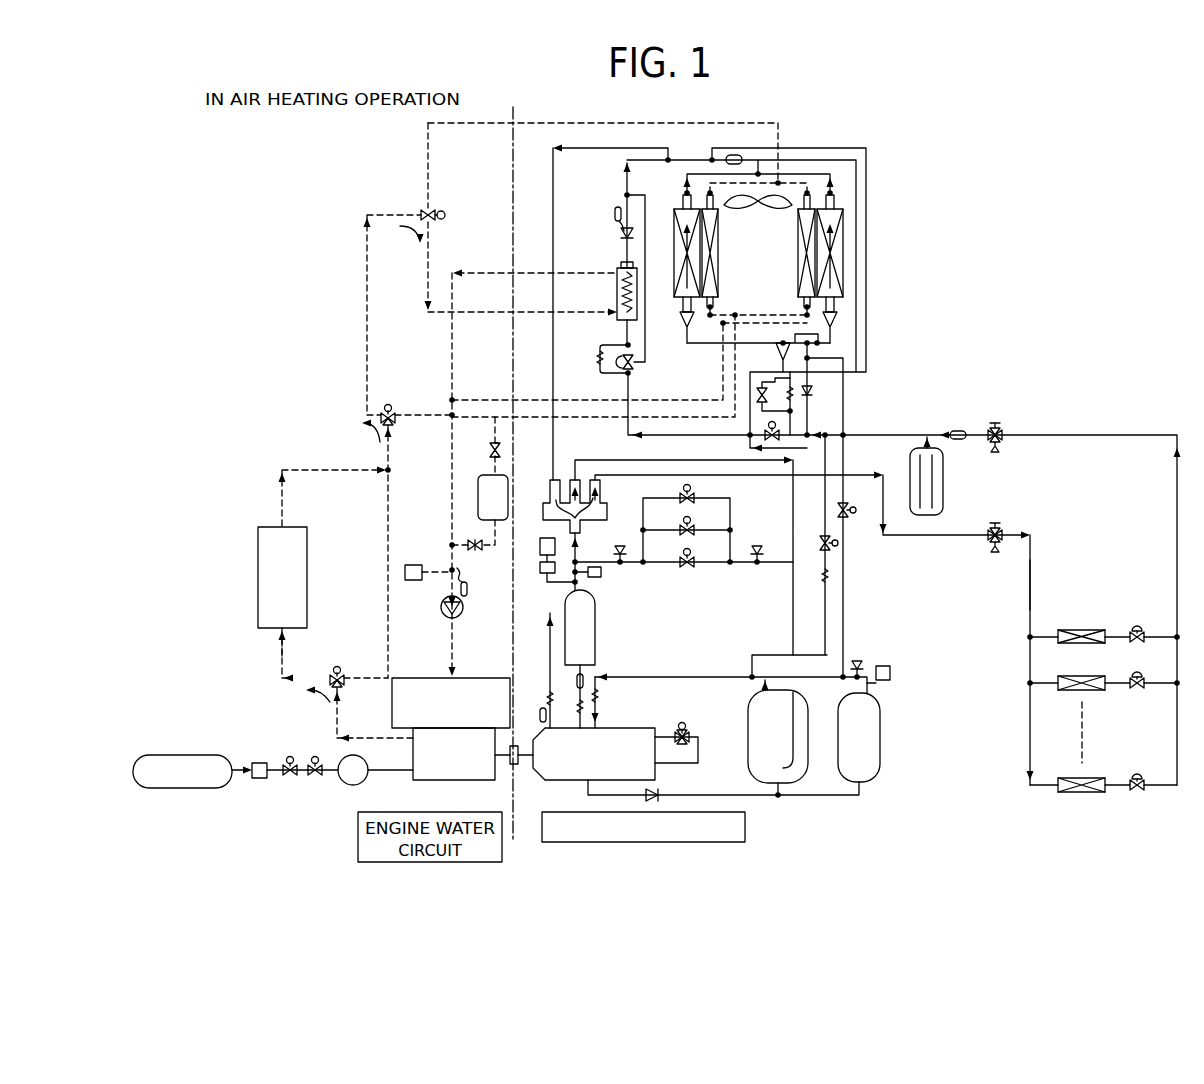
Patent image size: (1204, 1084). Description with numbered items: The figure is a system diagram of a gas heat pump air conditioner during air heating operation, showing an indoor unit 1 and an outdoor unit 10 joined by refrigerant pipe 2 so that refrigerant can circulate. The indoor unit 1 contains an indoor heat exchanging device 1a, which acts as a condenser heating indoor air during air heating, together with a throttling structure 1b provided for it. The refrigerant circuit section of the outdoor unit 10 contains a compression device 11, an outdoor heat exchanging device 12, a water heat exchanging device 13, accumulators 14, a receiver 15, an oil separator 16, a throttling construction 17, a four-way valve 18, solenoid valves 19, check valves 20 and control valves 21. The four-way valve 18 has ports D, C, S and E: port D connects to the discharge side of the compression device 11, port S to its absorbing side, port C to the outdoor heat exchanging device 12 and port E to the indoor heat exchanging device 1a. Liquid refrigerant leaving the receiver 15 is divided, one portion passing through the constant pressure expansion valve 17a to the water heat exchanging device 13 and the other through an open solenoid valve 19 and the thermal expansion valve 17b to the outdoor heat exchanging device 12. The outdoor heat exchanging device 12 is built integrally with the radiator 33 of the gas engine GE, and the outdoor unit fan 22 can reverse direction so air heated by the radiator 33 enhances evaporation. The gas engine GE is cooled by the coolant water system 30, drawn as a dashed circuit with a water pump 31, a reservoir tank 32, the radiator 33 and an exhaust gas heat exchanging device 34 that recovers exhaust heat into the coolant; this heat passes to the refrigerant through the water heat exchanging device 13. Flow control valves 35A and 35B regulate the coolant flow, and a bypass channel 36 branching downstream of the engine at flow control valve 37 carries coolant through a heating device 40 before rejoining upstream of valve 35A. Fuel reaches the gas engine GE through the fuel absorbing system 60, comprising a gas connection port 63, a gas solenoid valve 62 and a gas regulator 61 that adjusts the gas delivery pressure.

The indoor unit 1 is at (1119, 616).
The indoor heat exchanging device 1a is at (1080, 630).
The throttling structure 1b is at (1132, 645).
The refrigerant pipe 2 is at (1031, 583).
The outdoor unit 10 is at (905, 145).
The compression device 11 is at (680, 728).
The outdoor heat exchanging device 12 is at (674, 272).
The water heat exchanging device 13 is at (617, 268).
The accumulator 14 is at (748, 738).
The receiver 15 is at (945, 480).
The oil separator 16 is at (597, 625).
The throttling construction 17 is at (600, 358).
The throttling construction of the constant pressure expansion valve 17a is at (634, 364).
The throttling construction of the thermal expansion valve 17b is at (750, 390).
The 4-way valve 18 is at (604, 508).
The solenoid valve 19 is at (762, 437).
The check valve 20 is at (815, 392).
The control valve 21 is at (620, 232).
The outdoor unit fan 22 is at (775, 206).
The coolant water system 30 is at (372, 177).
The water pump 31 is at (464, 607).
The reservoir tank 32 is at (492, 478).
The radiator 33 is at (718, 255).
The exhaust gas heat exchanging device 34 is at (468, 678).
The flow control valve 35A is at (395, 414).
The flow control valve 35B is at (432, 207).
The bypass channel 36 is at (282, 656).
The flow control valve 37 is at (346, 668).
The heating device 40 is at (258, 580).
The fuel absorbing system 60 is at (266, 795).
The gas regulator 61 is at (353, 786).
The gas solenoid valve 62 is at (314, 780).
The gas connection port 63 is at (255, 762).
The gas engine GE is at (460, 782).